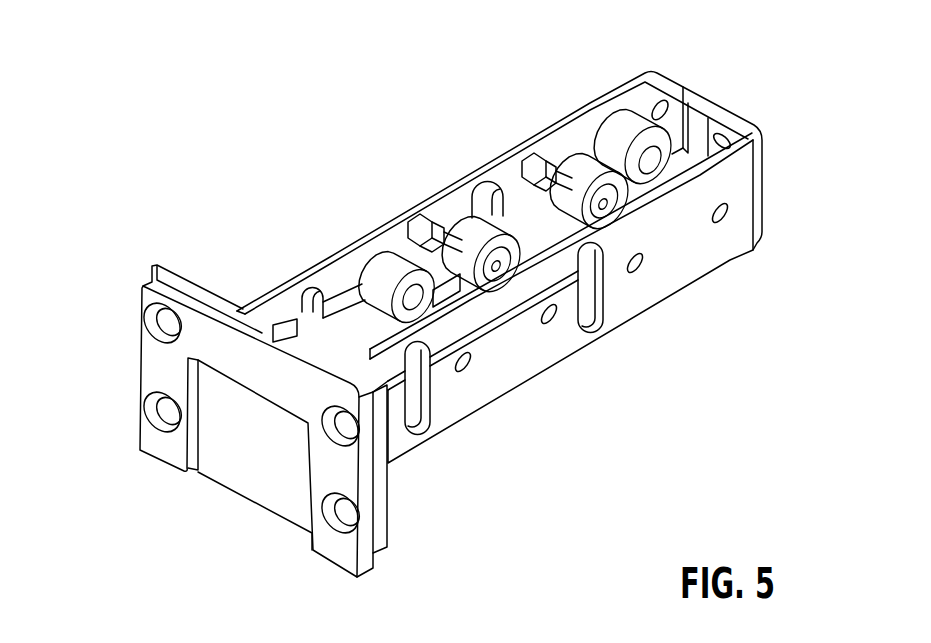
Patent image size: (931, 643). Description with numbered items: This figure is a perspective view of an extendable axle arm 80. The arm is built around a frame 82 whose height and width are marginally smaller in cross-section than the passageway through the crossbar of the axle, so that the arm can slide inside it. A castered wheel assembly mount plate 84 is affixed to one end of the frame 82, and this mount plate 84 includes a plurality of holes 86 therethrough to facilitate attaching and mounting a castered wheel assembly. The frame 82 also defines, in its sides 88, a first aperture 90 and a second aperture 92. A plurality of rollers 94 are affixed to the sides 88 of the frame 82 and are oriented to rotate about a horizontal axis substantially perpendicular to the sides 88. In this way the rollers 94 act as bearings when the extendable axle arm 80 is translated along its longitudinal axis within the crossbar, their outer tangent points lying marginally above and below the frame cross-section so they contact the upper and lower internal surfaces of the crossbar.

The extendable axle arm 80 is at (345, 187).
The frame 82 is at (710, 258).
The castered wheel assembly mount plate 84 is at (143, 361).
The holes 86 is at (158, 434).
The sides 88 is at (628, 82).
The first aperture 90 is at (433, 397).
The second aperture 92 is at (603, 262).
The rollers 94 is at (627, 133).